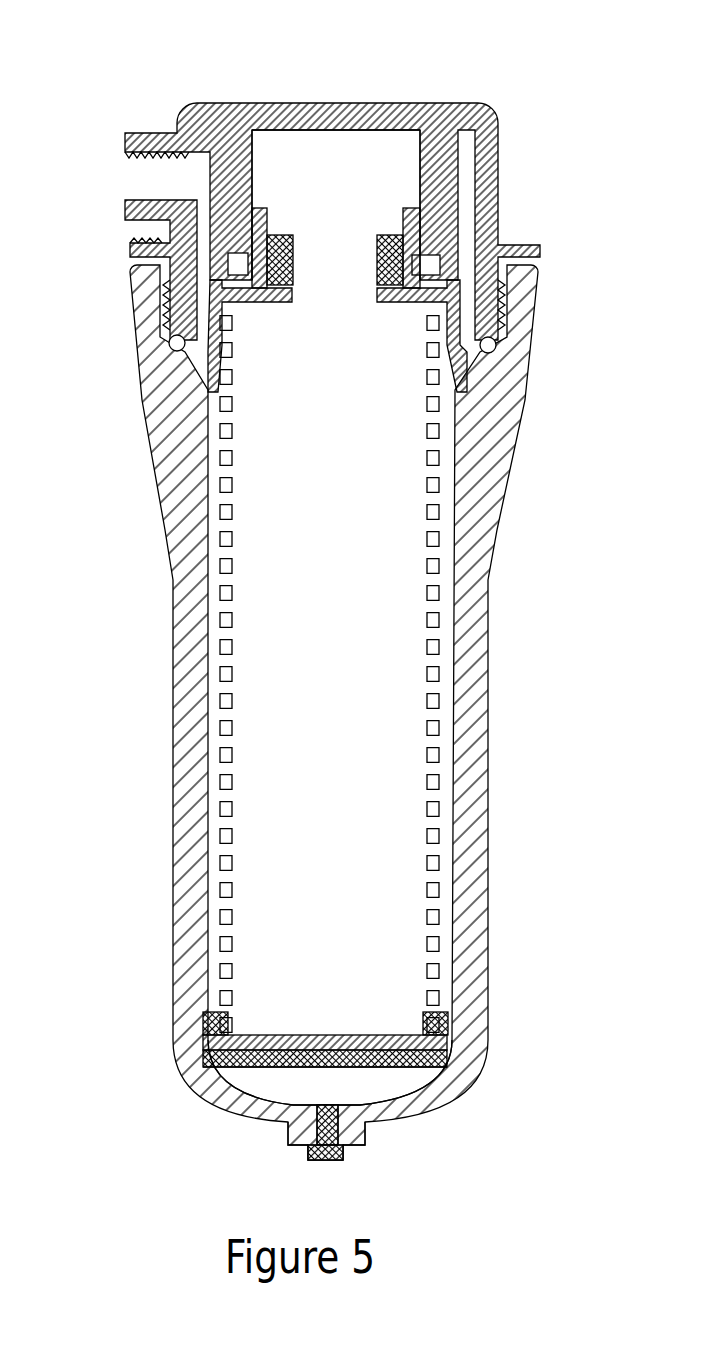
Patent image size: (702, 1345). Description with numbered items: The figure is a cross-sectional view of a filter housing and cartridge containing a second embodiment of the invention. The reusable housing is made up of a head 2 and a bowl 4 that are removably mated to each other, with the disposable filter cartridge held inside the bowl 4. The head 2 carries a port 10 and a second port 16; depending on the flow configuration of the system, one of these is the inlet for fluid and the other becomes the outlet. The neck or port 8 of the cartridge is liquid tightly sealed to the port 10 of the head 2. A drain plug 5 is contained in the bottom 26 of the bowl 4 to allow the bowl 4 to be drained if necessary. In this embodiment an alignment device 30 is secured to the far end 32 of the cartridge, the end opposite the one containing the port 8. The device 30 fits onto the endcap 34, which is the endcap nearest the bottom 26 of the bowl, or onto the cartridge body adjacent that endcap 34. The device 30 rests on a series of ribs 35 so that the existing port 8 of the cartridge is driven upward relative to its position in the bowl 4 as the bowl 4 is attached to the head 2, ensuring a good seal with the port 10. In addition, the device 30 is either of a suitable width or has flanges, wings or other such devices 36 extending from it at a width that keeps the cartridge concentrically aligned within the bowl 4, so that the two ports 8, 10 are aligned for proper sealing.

The head 2 is at (357, 102).
The bowl 4 is at (150, 425).
The drain plug 5 is at (318, 1165).
The port 8 is at (295, 268).
The port 10 is at (320, 180).
The second port 16 is at (143, 178).
The bottom 26 is at (327, 1090).
The alignment device 30 is at (440, 1068).
The far end 32 is at (325, 1010).
The endcap 34 is at (350, 1043).
The ribs 35 is at (250, 1078).
The flanges, wings or other such devices 36 is at (282, 1065).